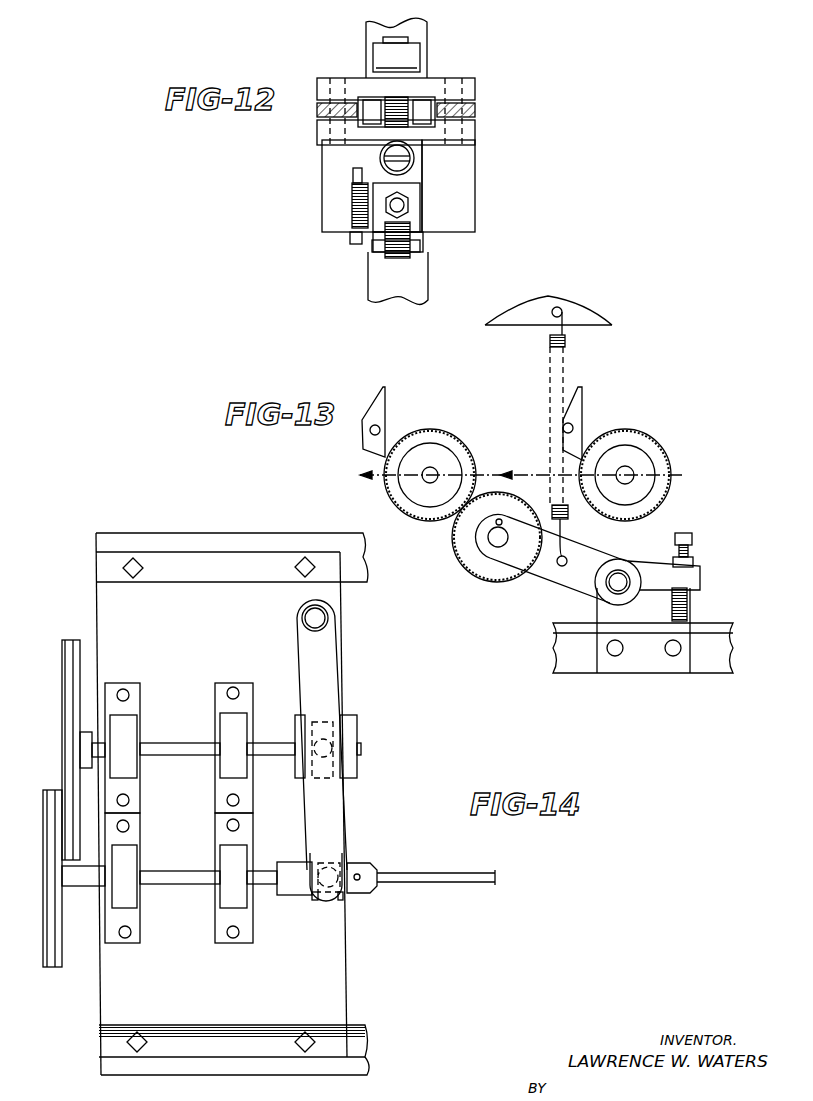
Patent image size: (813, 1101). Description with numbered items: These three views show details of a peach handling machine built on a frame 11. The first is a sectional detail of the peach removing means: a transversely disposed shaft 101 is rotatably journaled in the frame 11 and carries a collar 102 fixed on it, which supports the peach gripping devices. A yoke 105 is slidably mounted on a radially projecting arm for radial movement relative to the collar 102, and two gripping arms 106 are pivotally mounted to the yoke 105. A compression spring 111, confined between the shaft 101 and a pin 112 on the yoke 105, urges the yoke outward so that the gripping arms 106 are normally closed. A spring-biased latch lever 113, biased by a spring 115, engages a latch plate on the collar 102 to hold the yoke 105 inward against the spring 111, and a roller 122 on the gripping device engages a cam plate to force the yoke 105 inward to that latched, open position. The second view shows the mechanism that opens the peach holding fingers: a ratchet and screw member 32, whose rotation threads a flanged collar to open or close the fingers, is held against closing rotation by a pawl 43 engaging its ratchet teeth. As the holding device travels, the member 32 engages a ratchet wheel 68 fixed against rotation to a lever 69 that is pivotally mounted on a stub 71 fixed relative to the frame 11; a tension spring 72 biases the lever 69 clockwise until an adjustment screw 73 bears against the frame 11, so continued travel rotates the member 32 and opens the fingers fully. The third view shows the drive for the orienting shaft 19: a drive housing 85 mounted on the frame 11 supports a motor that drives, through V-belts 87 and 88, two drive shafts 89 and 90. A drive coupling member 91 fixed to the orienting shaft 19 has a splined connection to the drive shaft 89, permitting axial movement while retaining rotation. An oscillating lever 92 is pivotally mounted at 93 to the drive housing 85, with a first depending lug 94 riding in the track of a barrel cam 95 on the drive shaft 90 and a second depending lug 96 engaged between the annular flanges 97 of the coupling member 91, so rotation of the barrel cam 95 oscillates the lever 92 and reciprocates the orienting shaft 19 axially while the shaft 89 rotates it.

In FIG. 12, the transversely disposed shaft 101 is at (366, 30).
In FIG. 12, the roller 122 is at (417, 58).
In FIG. 12, the yoke 105 is at (352, 82).
In FIG. 12, the gripping arms 106 is at (476, 110).
In FIG. 12, the collar 102 is at (466, 188).
In FIG. 12, the compression spring 111 is at (380, 152).
In FIG. 12, the pin 112 is at (378, 160).
In FIG. 12, the spring 115 is at (350, 202).
In FIG. 12, the spring-biased latch lever 113 is at (385, 258).
In FIG. 13, the frame 11 is at (524, 318).
In FIG. 14, the frame 11 is at (174, 540).
In FIG. 13, the tension spring 72 is at (567, 376).
In FIG. 13, the pawl 43 is at (380, 400).
In FIG. 13, the ratchet and screw member 32 is at (452, 442).
In FIG. 13, the ratchet wheel 68 is at (465, 575).
In FIG. 13, the lever 69 is at (572, 590).
In FIG. 13, the stub 71 is at (625, 578).
In FIG. 13, the adjustment screw 73 is at (690, 602).
In FIG. 14, the drive housing 85 is at (347, 984).
In FIG. 14, the V-belt 87 is at (58, 968).
In FIG. 14, the V-belt 88 is at (74, 640).
In FIG. 14, the drive shaft 89 is at (188, 886).
In FIG. 14, the drive shaft 90 is at (190, 745).
In FIG. 14, the drive coupling member 91 is at (293, 896).
In FIG. 14, the oscillating lever 92 is at (340, 690).
In FIG. 14, the pivot 93 is at (318, 620).
In FIG. 14, the first depending lug 94 is at (330, 744).
In FIG. 14, the barrel cam 95 is at (357, 768).
In FIG. 14, the second depending lug 96 is at (335, 868).
In FIG. 14, the annular flanges 97 is at (340, 902).
In FIG. 14, the orienting shaft 19 is at (468, 872).